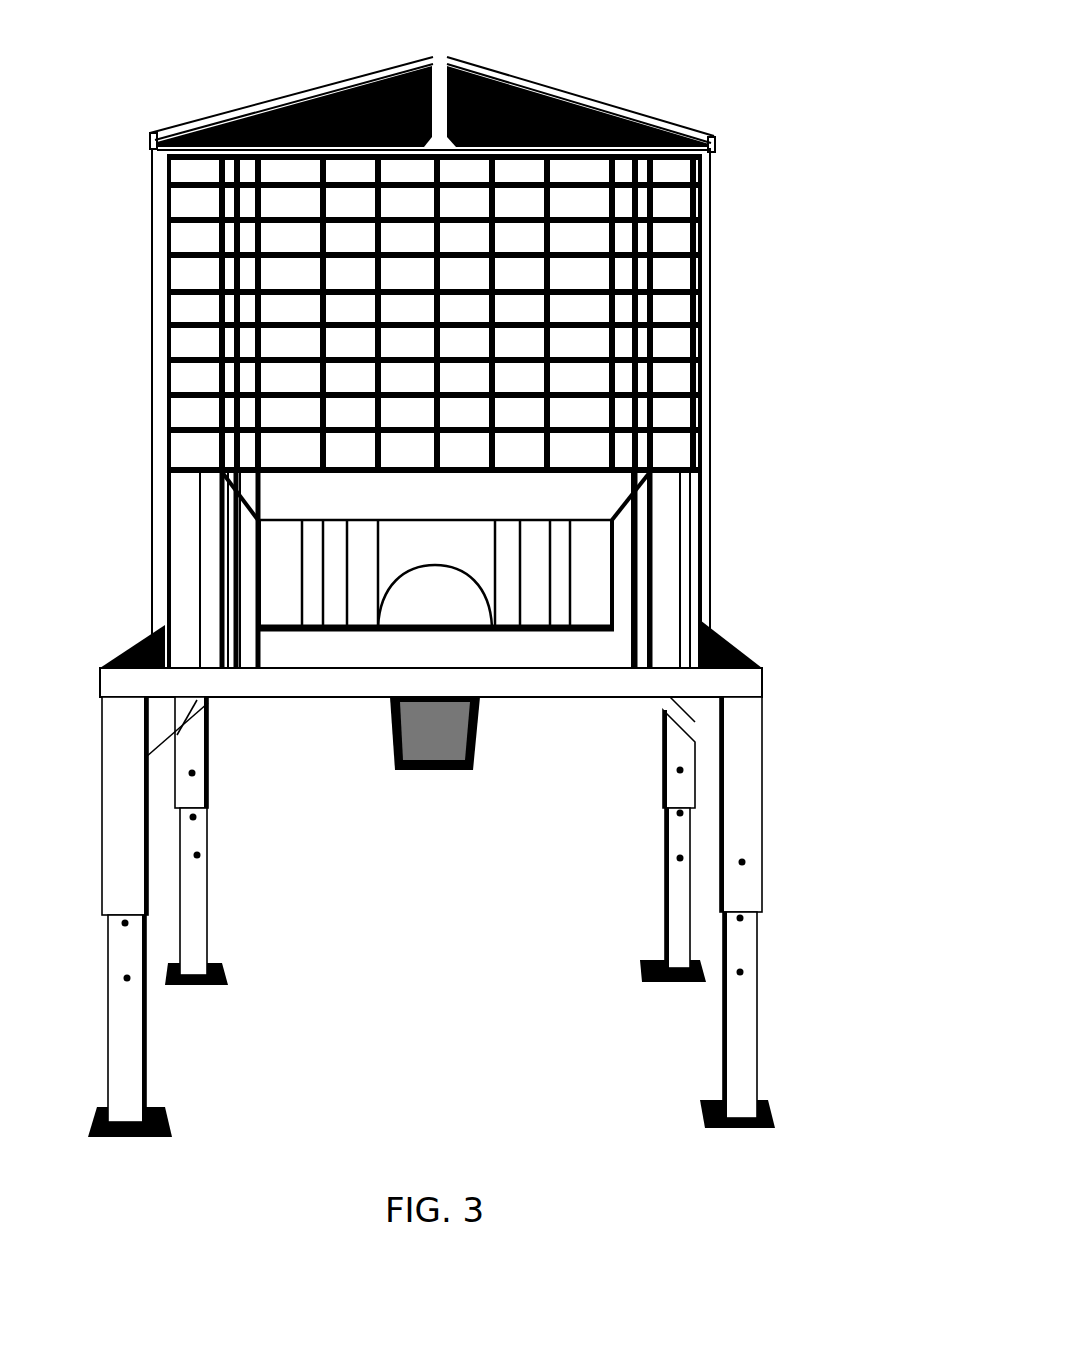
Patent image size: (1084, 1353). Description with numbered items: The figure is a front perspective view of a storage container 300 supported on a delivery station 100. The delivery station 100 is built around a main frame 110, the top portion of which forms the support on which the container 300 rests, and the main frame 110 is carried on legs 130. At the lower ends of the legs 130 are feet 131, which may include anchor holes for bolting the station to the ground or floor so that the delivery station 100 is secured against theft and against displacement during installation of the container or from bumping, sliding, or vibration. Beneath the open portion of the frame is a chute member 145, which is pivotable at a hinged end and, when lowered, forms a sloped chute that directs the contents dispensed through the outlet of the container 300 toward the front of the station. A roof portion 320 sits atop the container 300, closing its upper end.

The container 300 is at (521, 340).
The roof 320 is at (535, 88).
The delivery station 100 is at (500, 855).
The main frame 110 is at (228, 698).
The legs 130 is at (500, 917).
The feet 131 is at (700, 1113).
The chute member 145 is at (473, 757).